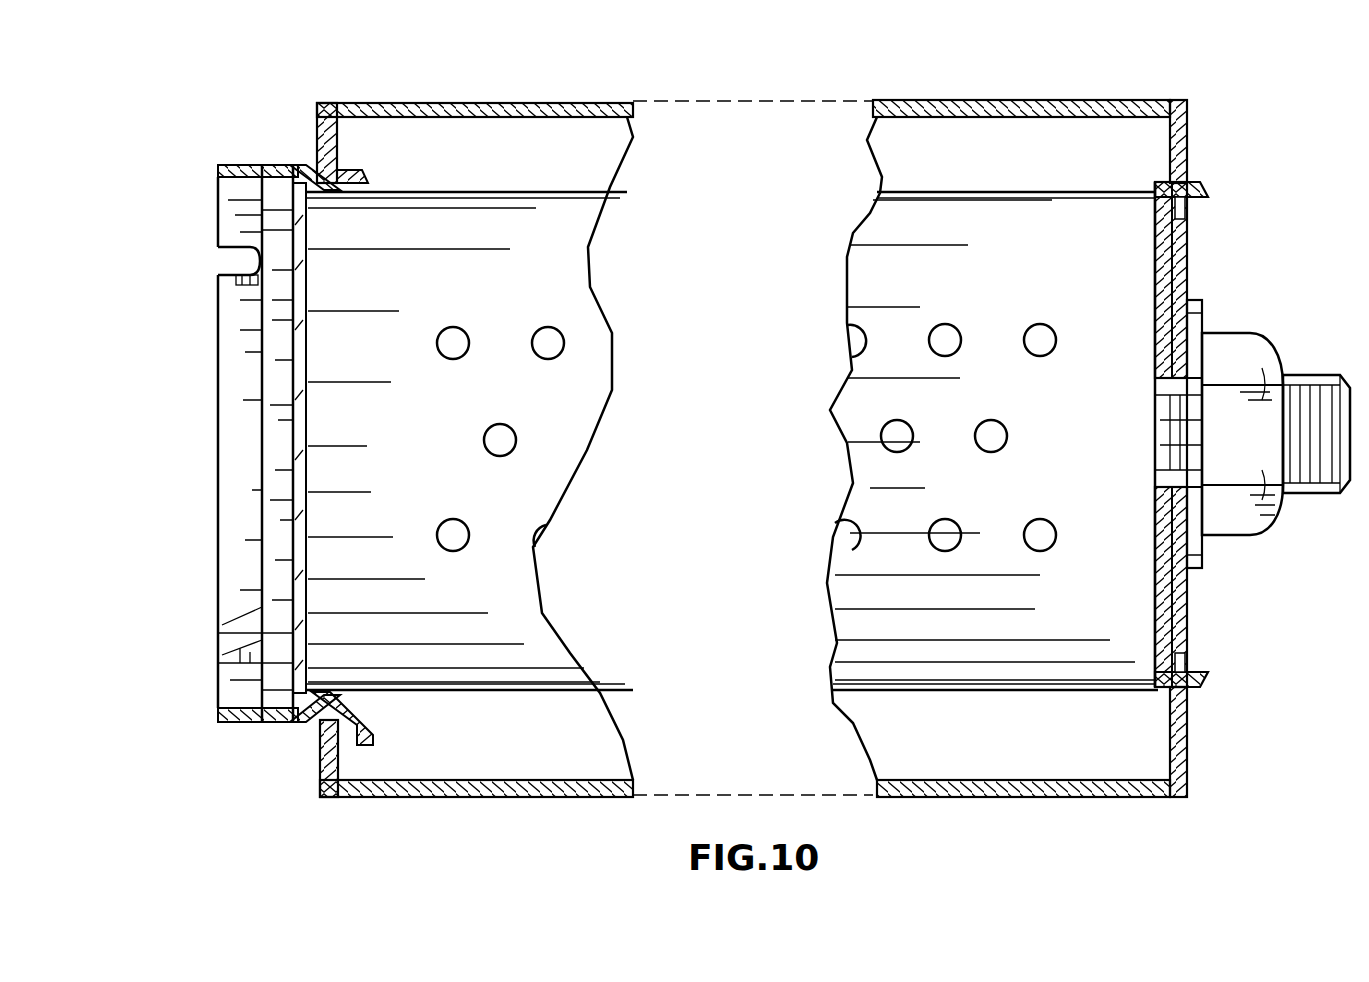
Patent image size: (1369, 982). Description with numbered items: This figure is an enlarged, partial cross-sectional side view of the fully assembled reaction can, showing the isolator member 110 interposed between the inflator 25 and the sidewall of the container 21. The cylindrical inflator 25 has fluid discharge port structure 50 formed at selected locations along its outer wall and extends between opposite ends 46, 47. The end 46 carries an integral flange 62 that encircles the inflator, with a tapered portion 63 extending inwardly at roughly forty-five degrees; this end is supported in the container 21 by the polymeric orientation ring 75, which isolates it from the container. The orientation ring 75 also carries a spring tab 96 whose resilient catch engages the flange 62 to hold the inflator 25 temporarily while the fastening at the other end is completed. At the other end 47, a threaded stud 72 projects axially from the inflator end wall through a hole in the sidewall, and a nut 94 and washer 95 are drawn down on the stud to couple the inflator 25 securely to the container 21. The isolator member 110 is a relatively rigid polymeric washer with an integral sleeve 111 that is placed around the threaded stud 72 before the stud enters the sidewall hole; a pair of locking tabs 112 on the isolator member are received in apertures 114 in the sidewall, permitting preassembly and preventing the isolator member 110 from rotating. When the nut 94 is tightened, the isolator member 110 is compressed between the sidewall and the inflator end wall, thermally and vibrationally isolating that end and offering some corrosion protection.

The container 21 is at (968, 86).
The inflator 25 is at (430, 178).
The end 46 is at (260, 472).
The other end 47 is at (1160, 588).
The fluid discharge port structure 50 is at (948, 326).
The flange 62 is at (275, 402).
The tapered portion 63 is at (300, 345).
The threaded stud 72 is at (1300, 492).
The orientation ring 75 is at (280, 150).
The nut 94 is at (1252, 345).
The washer 95 is at (1195, 303).
The spring tab 96 is at (240, 633).
The isolator member 110 is at (1155, 178).
The sleeve 111 is at (1160, 378).
The locking tabs 112 is at (1195, 188).
The apertures 114 is at (1183, 210).